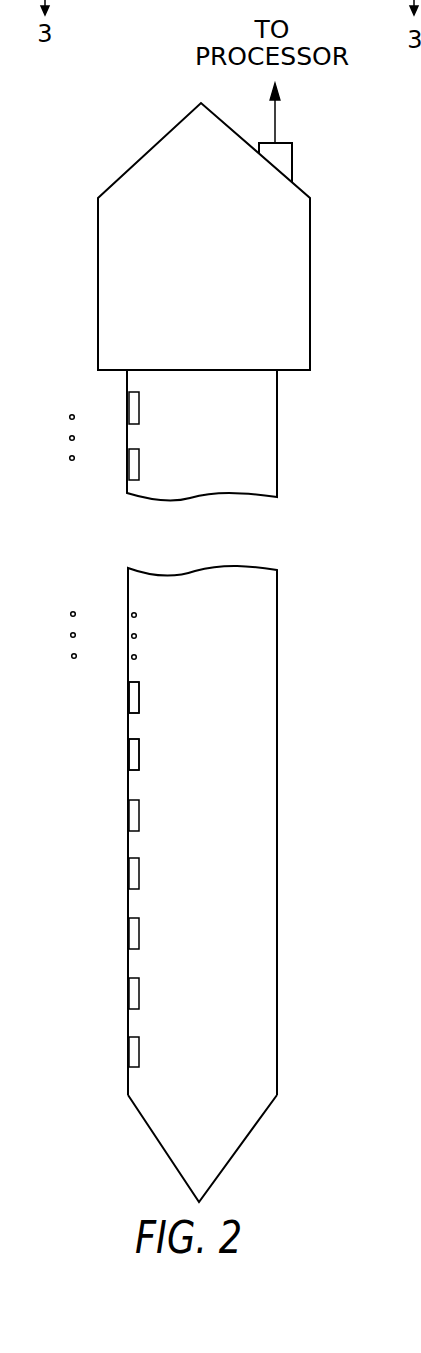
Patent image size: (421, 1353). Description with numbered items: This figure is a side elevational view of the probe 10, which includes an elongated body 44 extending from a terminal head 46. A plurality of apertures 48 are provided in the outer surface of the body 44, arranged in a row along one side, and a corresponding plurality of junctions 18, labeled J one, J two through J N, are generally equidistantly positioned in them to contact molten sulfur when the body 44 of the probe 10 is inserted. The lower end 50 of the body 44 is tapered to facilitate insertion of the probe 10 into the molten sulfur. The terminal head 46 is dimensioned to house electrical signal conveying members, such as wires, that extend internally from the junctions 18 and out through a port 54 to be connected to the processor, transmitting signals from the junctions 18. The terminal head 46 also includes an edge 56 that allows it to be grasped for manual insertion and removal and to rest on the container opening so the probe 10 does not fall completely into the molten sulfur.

The probe 10 is at (108, 86).
The junctions 18 is at (128, 750).
The elongated body 44 is at (260, 760).
The terminal head 46 is at (97, 249).
The apertures 48 is at (140, 995).
The lower end 50 is at (252, 1130).
The port 54 is at (292, 158).
The edge 56 is at (304, 371).